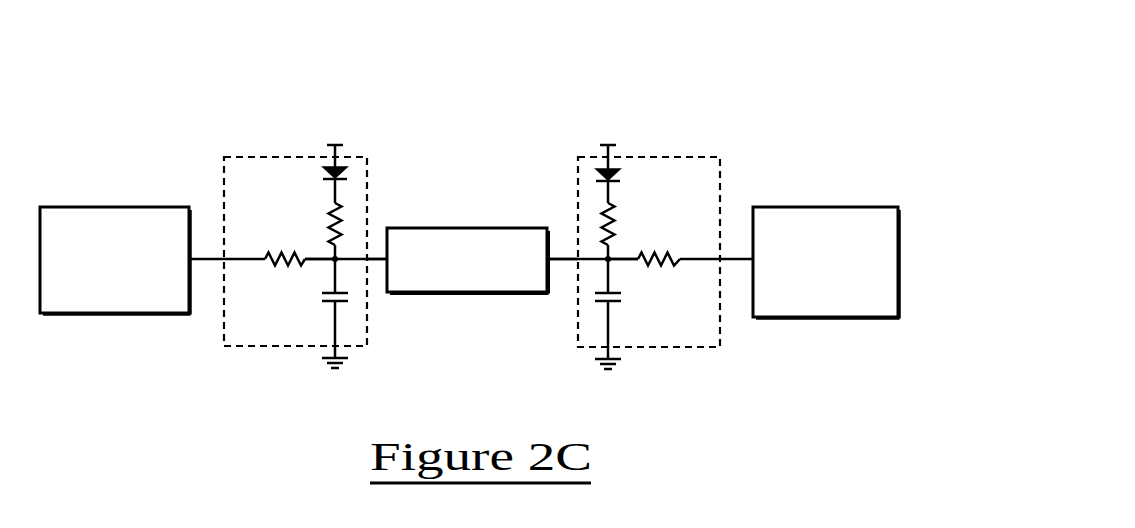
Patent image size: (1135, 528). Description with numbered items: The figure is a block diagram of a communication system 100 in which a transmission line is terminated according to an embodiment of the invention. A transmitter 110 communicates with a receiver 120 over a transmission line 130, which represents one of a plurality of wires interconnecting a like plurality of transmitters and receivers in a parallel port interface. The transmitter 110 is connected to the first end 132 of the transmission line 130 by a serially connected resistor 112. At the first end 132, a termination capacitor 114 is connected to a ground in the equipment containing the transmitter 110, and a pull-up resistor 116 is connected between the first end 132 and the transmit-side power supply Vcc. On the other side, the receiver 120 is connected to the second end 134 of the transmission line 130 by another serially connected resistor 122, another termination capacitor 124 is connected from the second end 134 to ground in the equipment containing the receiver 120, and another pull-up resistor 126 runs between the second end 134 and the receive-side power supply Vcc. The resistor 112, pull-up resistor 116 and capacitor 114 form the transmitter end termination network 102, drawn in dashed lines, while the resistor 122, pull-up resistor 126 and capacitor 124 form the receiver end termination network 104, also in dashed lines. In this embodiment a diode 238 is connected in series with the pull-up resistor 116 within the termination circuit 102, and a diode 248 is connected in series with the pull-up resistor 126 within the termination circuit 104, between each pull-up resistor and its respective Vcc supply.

The transmission line communication circuit 100 is at (656, 58).
The transmitter end termination network 102 is at (250, 157).
The receiver end termination network 104 is at (697, 157).
The transmitter 110 is at (96, 207).
The serially connected resistor 112 is at (293, 252).
The termination capacitor 114 is at (331, 303).
The pull-up resistor 116 is at (330, 219).
The receiver 120 is at (798, 207).
The serially connected resistor 122 is at (653, 255).
The termination capacitor 124 is at (613, 302).
The pull-up resistor 126 is at (614, 217).
The transmission line 130 is at (445, 228).
The first end of the transmission line 132 is at (374, 262).
The second end of the transmission line 134 is at (563, 262).
The diode 238 is at (345, 174).
The diode 248 is at (600, 176).